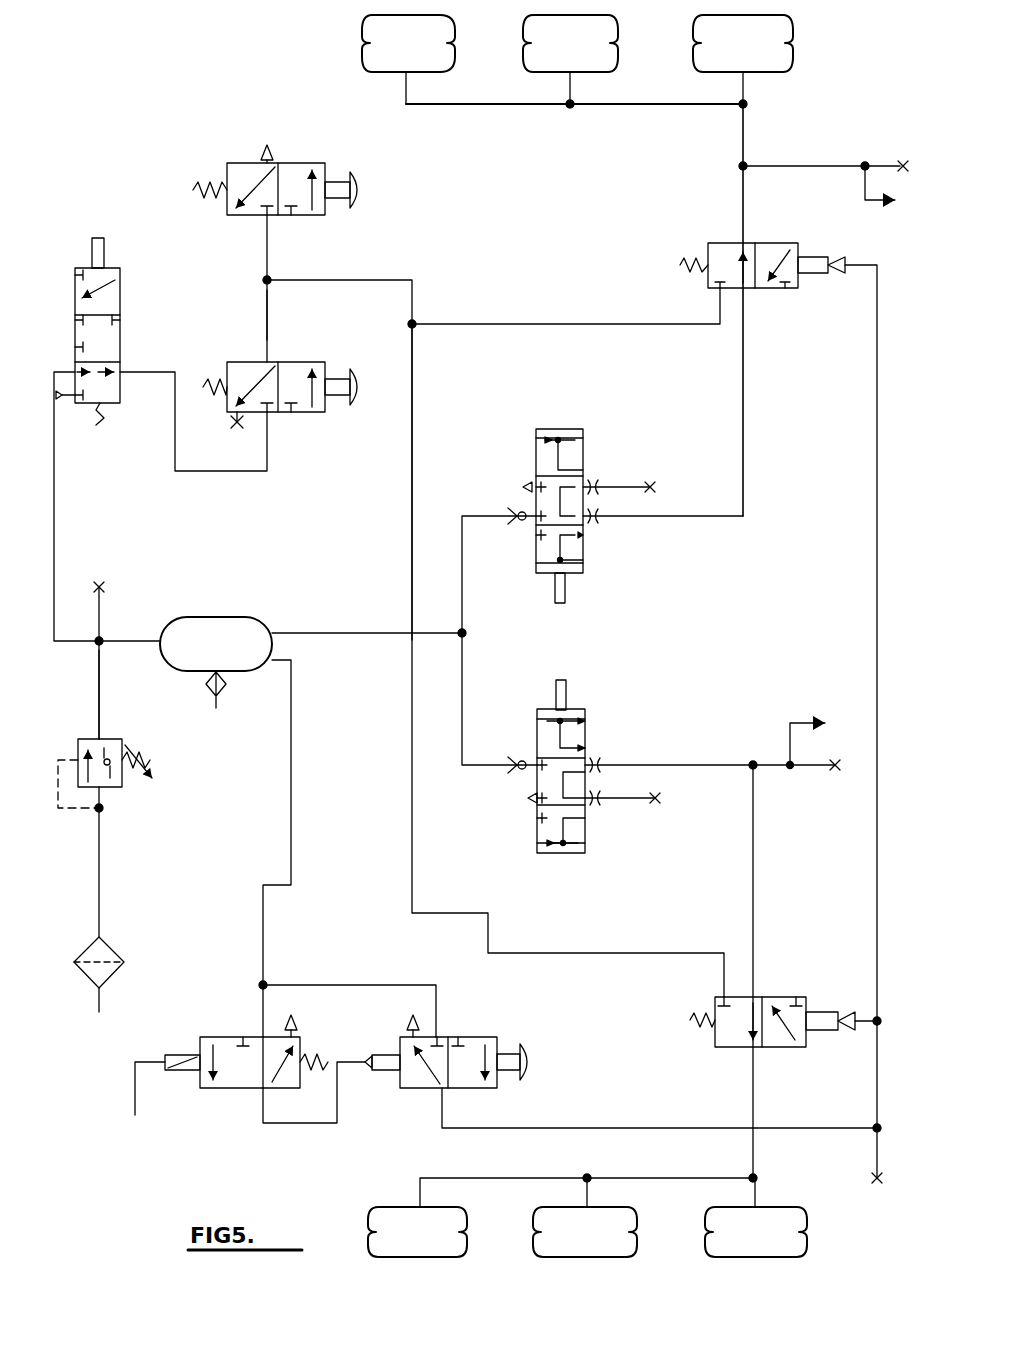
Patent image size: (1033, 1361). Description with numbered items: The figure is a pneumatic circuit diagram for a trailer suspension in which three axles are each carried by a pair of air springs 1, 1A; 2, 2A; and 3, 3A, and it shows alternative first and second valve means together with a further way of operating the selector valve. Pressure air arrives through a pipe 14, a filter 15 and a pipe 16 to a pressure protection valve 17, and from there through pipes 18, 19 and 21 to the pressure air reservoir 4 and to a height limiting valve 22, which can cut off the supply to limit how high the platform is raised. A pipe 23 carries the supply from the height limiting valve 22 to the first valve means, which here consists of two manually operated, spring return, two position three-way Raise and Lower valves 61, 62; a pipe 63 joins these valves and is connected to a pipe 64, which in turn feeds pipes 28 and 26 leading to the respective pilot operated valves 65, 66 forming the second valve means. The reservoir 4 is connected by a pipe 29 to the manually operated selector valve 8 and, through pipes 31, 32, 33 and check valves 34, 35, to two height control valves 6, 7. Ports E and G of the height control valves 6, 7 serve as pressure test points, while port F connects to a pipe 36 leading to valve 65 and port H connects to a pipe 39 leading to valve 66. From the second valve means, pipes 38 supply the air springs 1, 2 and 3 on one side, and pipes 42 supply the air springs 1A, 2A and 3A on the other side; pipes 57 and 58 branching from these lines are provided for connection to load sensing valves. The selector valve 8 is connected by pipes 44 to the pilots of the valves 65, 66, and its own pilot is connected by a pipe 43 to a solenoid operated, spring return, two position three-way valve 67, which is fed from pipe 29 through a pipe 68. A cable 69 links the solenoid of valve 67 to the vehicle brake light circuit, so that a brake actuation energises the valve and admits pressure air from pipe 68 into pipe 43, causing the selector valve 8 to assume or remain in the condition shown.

The air spring 1 is at (398, 56).
The air spring 2 is at (561, 56).
The air spring 3 is at (735, 56).
The air spring 1A is at (401, 1245).
The air spring 2A is at (568, 1245).
The air spring 3A is at (739, 1245).
The pressure air reservoir 4 is at (208, 658).
The height control valve 6 is at (590, 434).
The height control valve 7 is at (580, 695).
The manually operated selector valve 8 is at (507, 1044).
The pipe 14 is at (105, 1008).
The filter 15 is at (115, 975).
The pipe 16 is at (100, 862).
The pressure protection valve 17 is at (118, 787).
The pipe 18 is at (100, 675).
The pipe 19 is at (128, 640).
The pipe 21 is at (56, 503).
The height limiting valve 22 is at (118, 260).
The pipe 23 is at (158, 371).
The pipe 26 is at (413, 503).
The pipe 28 is at (573, 325).
The pipe 29 is at (290, 730).
The pipe 31 is at (297, 632).
The pipe 32 is at (463, 571).
The pipe 33 is at (465, 697).
The check valve 34 is at (515, 512).
The check valve 35 is at (520, 772).
The pipe 36 is at (688, 517).
The pipes 38 is at (652, 105).
The pipe 39 is at (660, 767).
The pipes 42 is at (650, 1178).
The pipe 43 is at (310, 1123).
The pipes 44 is at (877, 580).
The pipe 57 is at (865, 183).
The pipe 58 is at (805, 722).
The Raise valve 61 is at (309, 358).
The Lower valve 62 is at (308, 158).
The pipe 63 is at (267, 333).
The pipe 64 is at (372, 280).
The pilot operated valve 65 is at (810, 240).
The pilot operated valve 66 is at (812, 1050).
The solenoid operated valve 67 is at (280, 1026).
The pipe 68 is at (262, 1012).
The cable 69 is at (136, 1092).
The port E is at (592, 478).
The port F is at (588, 526).
The port G is at (588, 806).
The port H is at (590, 760).